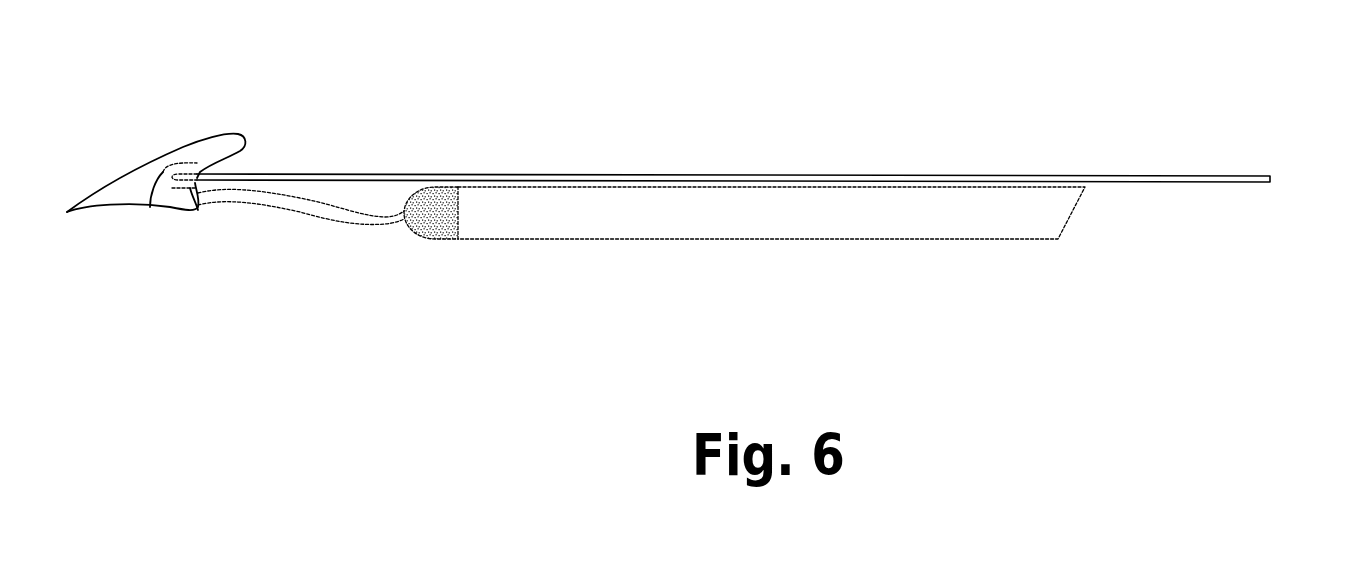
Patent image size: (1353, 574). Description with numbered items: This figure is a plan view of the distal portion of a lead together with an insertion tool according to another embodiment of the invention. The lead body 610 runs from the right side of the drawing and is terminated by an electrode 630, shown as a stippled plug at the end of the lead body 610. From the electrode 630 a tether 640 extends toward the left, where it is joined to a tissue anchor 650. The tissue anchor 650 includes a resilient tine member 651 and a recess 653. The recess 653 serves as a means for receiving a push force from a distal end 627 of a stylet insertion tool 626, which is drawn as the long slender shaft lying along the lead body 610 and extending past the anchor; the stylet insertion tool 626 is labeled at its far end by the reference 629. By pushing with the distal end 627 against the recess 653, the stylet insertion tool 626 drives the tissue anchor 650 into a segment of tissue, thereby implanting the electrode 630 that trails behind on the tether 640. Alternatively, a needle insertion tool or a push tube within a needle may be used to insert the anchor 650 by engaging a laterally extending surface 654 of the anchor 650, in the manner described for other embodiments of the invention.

The lead body 610 is at (667, 223).
The stylet insertion tool 626 is at (433, 183).
The distal end 627 is at (150, 207).
The rod end 629 is at (1280, 172).
The electrode 630 is at (433, 232).
The tether 640 is at (308, 203).
The tissue anchor 650 is at (107, 178).
The resilient tine member 651 is at (221, 146).
The recess 653 is at (202, 170).
The laterally extending surface 654 is at (206, 134).